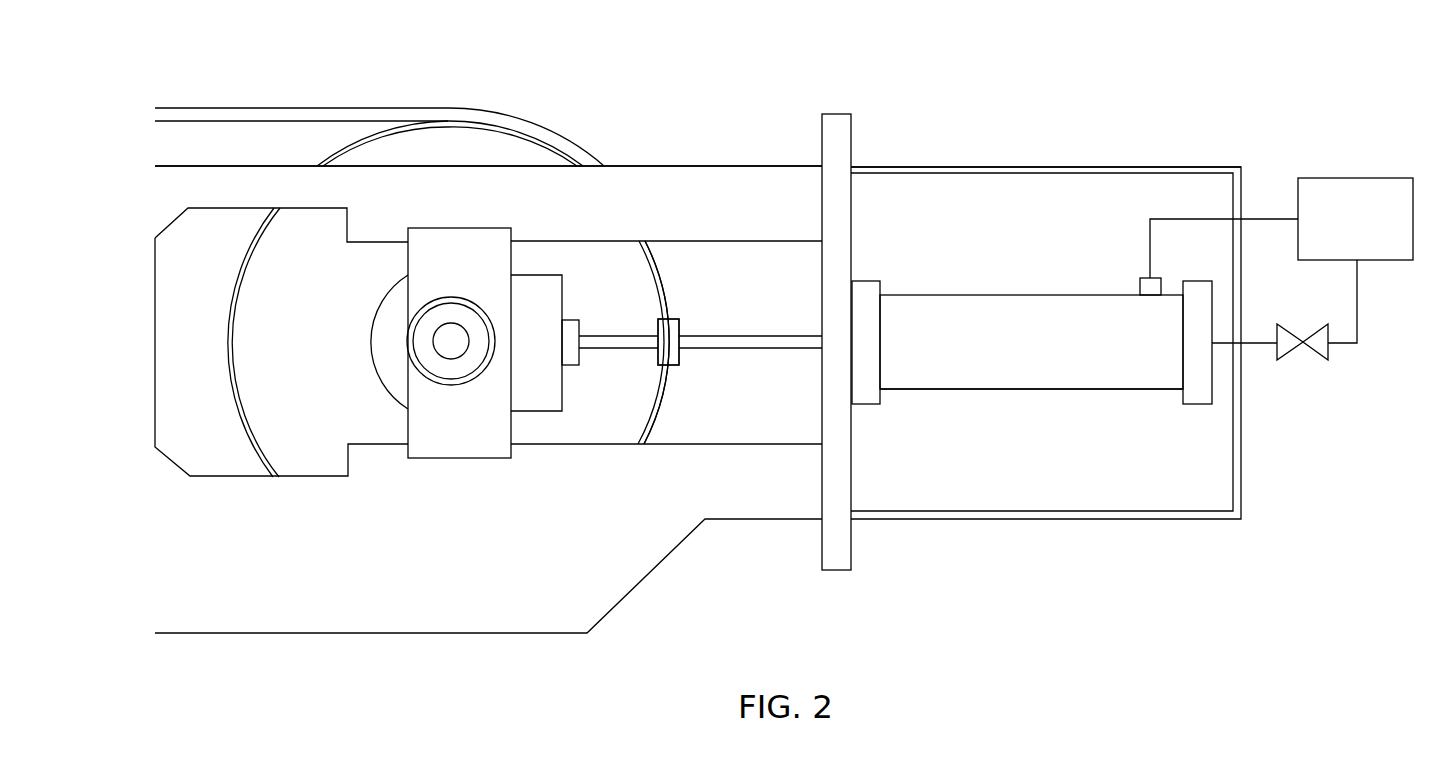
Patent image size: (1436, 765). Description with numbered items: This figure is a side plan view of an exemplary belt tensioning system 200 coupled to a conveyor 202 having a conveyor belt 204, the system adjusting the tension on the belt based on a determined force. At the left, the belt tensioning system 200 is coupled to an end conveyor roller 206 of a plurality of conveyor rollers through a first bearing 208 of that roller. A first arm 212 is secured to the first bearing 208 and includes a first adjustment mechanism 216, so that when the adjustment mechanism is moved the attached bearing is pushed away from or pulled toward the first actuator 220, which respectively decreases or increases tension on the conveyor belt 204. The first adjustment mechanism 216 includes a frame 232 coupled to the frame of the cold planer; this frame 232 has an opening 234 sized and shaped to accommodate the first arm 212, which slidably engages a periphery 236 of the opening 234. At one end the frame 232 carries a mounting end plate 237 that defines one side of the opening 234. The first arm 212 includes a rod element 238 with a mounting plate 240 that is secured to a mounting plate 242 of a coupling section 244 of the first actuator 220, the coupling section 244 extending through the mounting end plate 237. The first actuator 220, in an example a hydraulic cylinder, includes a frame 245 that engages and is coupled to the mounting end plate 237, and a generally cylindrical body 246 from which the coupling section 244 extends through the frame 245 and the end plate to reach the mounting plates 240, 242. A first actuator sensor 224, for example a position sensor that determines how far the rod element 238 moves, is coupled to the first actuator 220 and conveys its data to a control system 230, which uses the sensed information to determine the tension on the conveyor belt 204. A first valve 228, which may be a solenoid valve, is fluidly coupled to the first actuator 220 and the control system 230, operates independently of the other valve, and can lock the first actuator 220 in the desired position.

The belt tensioning system 200 is at (1225, 60).
The conveyor 202 is at (517, 93).
The conveyor belt 204 is at (305, 108).
The end conveyor roller 206 is at (490, 148).
The first bearing 208 is at (485, 313).
The first arm 212 is at (387, 343).
The first adjustment mechanism 216 is at (1098, 142).
The first actuator 220 is at (1032, 293).
The first actuator sensor 224 is at (1140, 283).
The first valve 228 is at (1306, 352).
The control system 230 is at (1357, 178).
The frame 232 is at (690, 177).
The opening 234 is at (555, 243).
The periphery 236 is at (655, 265).
The mounting end plate 237 is at (838, 137).
The rod element 238 is at (620, 333).
The mounting plate 240 is at (665, 353).
The mounting plate 242 is at (680, 322).
The coupling section 244 is at (753, 348).
The frame 245 is at (1000, 167).
The body 246 is at (1033, 392).